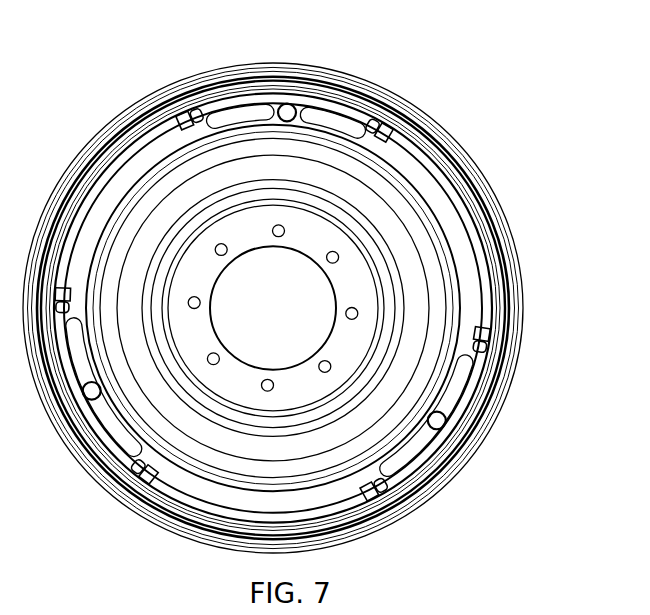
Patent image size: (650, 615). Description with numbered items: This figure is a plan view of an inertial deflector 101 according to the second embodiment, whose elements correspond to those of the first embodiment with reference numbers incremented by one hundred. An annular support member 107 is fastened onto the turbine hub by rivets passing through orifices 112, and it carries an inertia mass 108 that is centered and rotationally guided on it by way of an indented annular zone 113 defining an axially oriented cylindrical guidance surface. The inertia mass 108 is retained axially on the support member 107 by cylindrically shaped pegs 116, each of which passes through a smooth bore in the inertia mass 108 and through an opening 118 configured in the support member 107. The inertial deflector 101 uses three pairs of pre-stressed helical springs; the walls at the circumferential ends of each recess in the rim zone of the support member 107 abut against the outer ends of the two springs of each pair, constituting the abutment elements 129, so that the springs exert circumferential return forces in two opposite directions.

The inertial deflector 101 is at (302, 306).
The support member 107 is at (354, 308).
The inertia mass 108 is at (273, 290).
The orifices 112 is at (353, 362).
The indented annular zone 113 is at (339, 307).
The pegs 116 is at (264, 219).
The opening 118 is at (269, 257).
The abutment elements 129 is at (262, 349).